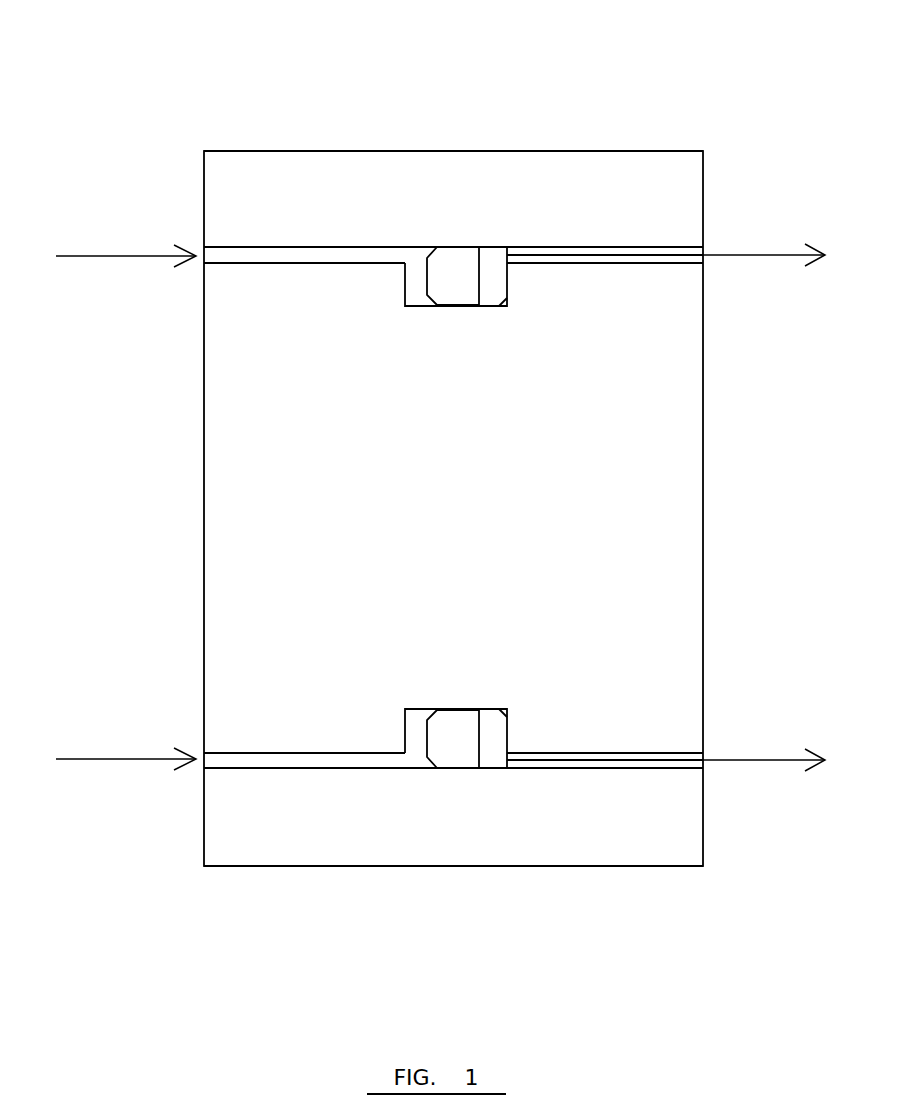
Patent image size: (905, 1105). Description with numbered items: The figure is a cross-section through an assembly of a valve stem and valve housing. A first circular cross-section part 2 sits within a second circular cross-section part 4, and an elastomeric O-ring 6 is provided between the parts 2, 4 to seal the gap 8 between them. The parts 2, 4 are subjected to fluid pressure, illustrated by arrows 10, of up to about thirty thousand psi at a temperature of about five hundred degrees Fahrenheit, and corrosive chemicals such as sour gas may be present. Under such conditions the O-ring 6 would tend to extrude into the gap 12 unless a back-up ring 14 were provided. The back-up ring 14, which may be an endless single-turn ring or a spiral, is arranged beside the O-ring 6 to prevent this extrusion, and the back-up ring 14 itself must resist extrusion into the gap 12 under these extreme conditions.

The first circular cross-section part 2 is at (265, 507).
The second circular cross-section part 4 is at (203, 203).
The elastomeric O-ring 6 is at (453, 272).
The gap 8 is at (303, 245).
The arrows 10 is at (439, 497).
The gap 12 is at (604, 250).
The back-up ring 14 is at (493, 263).